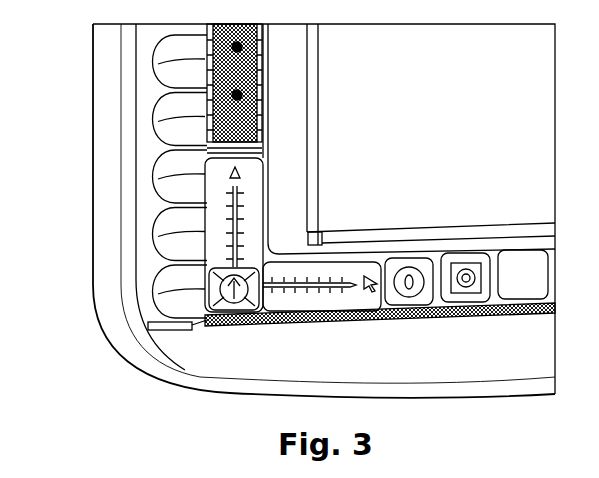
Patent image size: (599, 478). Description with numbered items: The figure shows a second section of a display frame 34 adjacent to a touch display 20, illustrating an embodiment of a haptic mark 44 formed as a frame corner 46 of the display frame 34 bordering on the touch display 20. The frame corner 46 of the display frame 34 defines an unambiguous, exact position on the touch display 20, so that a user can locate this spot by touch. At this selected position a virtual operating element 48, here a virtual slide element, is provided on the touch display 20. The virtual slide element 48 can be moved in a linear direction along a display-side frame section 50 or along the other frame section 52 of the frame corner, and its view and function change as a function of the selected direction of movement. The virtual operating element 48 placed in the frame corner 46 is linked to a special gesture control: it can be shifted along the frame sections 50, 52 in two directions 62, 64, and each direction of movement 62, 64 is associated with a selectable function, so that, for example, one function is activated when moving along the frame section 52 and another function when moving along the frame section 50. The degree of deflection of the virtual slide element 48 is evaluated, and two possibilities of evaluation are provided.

The touch display 20 is at (454, 159).
The display frame 34 is at (103, 201).
The haptic mark 44 is at (276, 326).
The frame corner 46 is at (207, 328).
The virtual operating element 48 is at (277, 268).
The display-side frame section 50 is at (255, 157).
The frame section 52 is at (335, 325).
The direction of movement 62 is at (371, 293).
The direction of movement 64 is at (248, 176).